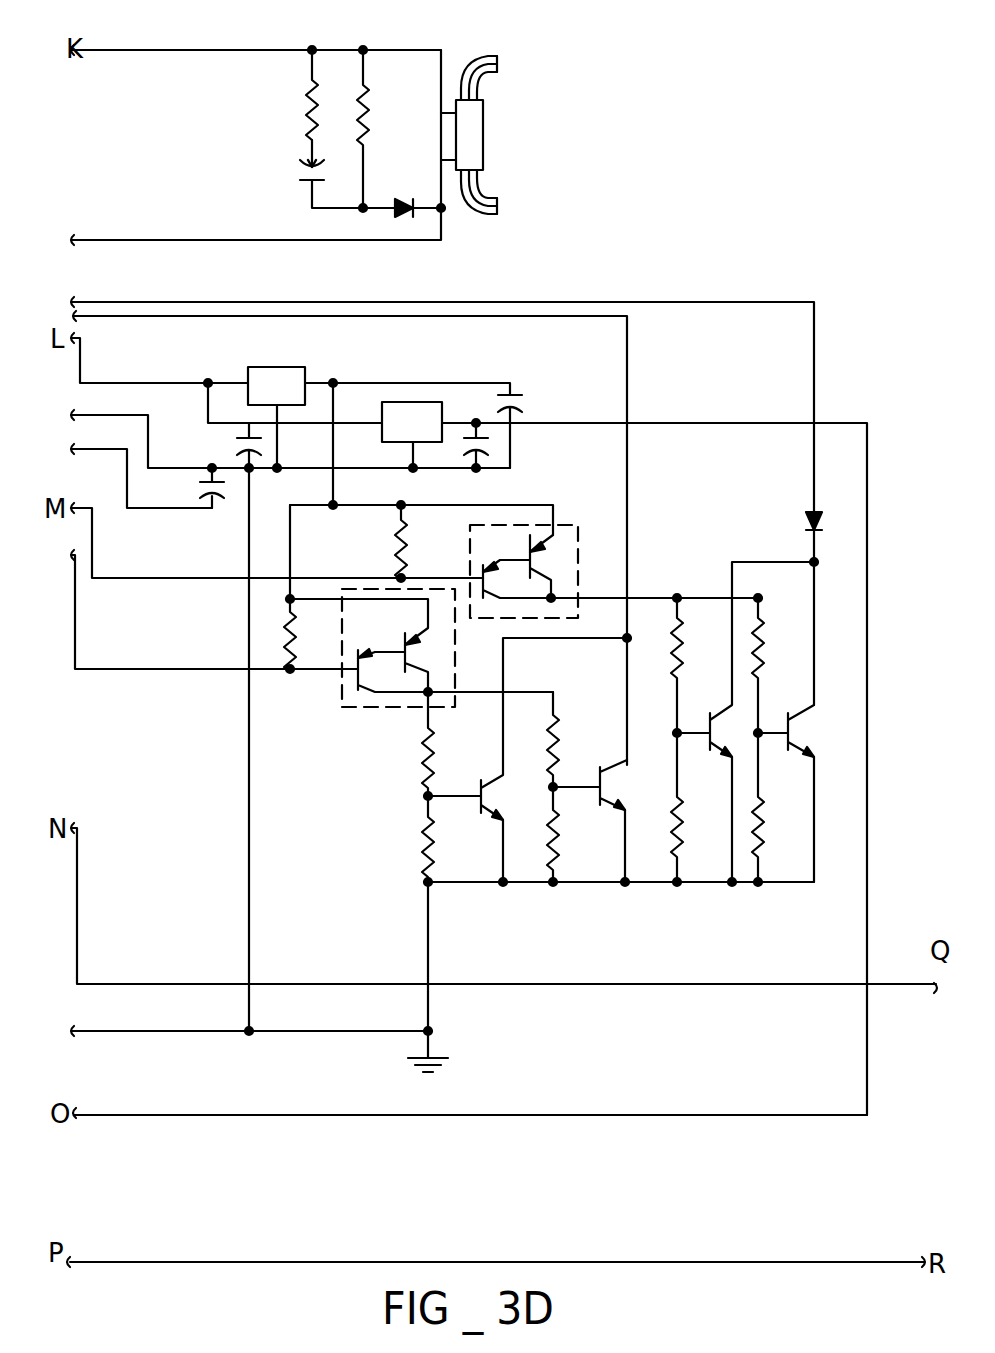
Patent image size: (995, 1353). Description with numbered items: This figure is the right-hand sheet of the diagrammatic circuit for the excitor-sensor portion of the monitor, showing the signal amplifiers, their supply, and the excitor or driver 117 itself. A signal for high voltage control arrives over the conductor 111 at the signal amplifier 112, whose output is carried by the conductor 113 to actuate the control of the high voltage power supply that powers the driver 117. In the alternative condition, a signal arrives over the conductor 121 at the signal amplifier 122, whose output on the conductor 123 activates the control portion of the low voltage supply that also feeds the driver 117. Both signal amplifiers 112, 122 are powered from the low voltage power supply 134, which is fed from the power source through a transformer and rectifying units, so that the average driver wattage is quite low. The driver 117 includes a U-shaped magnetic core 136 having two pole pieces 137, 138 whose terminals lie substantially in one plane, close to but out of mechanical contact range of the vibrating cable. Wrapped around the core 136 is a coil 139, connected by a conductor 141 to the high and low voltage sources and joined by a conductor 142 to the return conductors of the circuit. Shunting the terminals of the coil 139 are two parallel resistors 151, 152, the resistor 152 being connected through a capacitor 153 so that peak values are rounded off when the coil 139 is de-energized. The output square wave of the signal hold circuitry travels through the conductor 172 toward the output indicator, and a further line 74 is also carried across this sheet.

The conductor 141 is at (290, 51).
The conductor 142 is at (345, 242).
The resistor 152 is at (304, 99).
The capacitor 153 is at (298, 174).
The resistor 151 is at (365, 113).
The excitor or driver 117 is at (503, 119).
The pole piece 137 is at (500, 66).
The coil 139 is at (485, 135).
The magnetic core 136 is at (492, 188).
The pole piece 138 is at (498, 206).
The conductor 123 is at (188, 301).
The conductor 113 is at (147, 320).
The low voltage power supply 134 is at (270, 372).
The signal amplifier 122 is at (597, 522).
The signal amplifier 112 is at (342, 708).
The conductor 121 is at (213, 578).
The conductor 111 is at (212, 669).
The conductor 172 is at (108, 984).
The line P-R 74 is at (254, 1262).